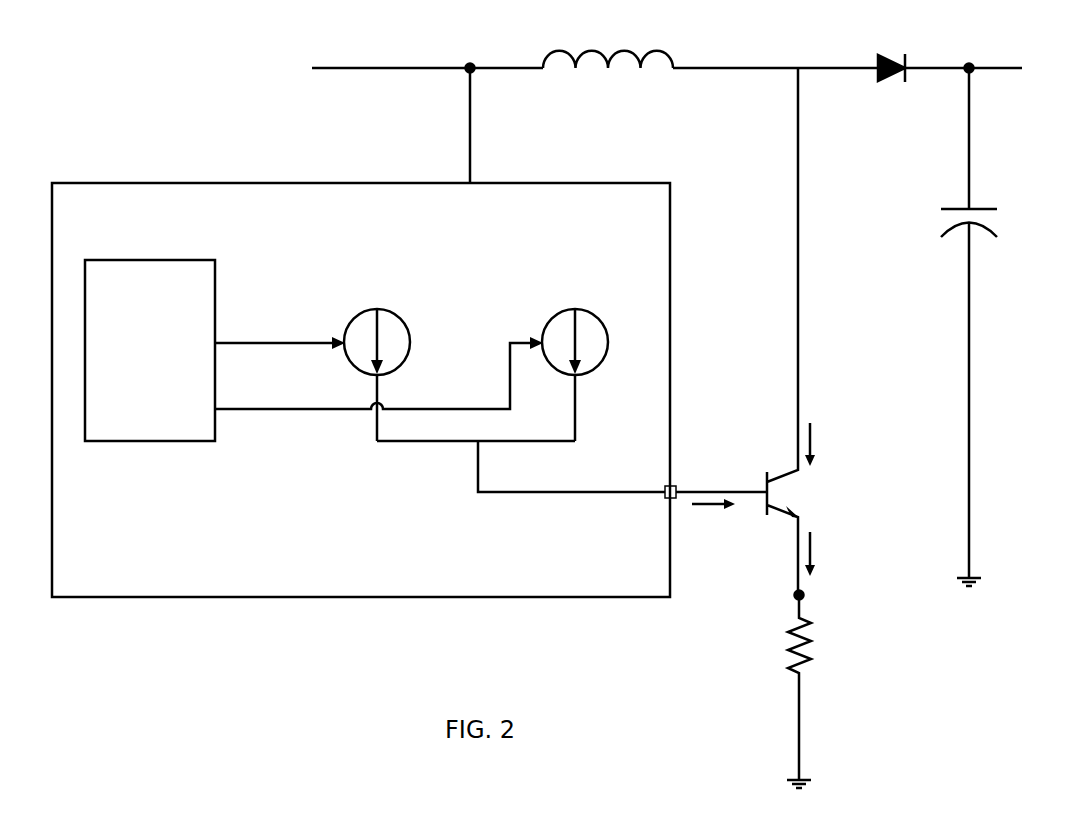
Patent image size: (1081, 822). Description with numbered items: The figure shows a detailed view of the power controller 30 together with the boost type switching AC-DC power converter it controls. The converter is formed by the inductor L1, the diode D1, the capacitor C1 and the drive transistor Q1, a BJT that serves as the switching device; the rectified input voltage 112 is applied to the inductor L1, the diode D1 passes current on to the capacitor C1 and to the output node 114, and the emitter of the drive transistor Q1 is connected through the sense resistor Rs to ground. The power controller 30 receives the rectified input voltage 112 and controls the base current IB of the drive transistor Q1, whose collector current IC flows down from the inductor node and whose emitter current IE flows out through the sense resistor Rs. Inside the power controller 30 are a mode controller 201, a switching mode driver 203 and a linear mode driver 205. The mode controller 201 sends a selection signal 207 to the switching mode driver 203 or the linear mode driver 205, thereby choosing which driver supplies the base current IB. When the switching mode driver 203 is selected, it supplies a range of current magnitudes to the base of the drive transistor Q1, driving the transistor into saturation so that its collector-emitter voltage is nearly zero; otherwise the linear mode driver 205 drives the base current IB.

The power controller 30 is at (125, 183).
The rectified input voltage 112 is at (396, 68).
The output node 114 is at (1010, 68).
The mode controller 201 is at (150, 350).
The switching mode driver 203 is at (380, 329).
The linear mode driver 205 is at (573, 334).
The selection signal 207 is at (251, 343).
The inductor L1 is at (608, 39).
The diode D1 is at (894, 47).
The capacitor C1 is at (989, 327).
The drive transistor Q1 is at (797, 331).
The sense resistor Rs is at (780, 690).
The base current IB is at (713, 487).
The collector current IC is at (794, 444).
The emitter current IE is at (794, 554).